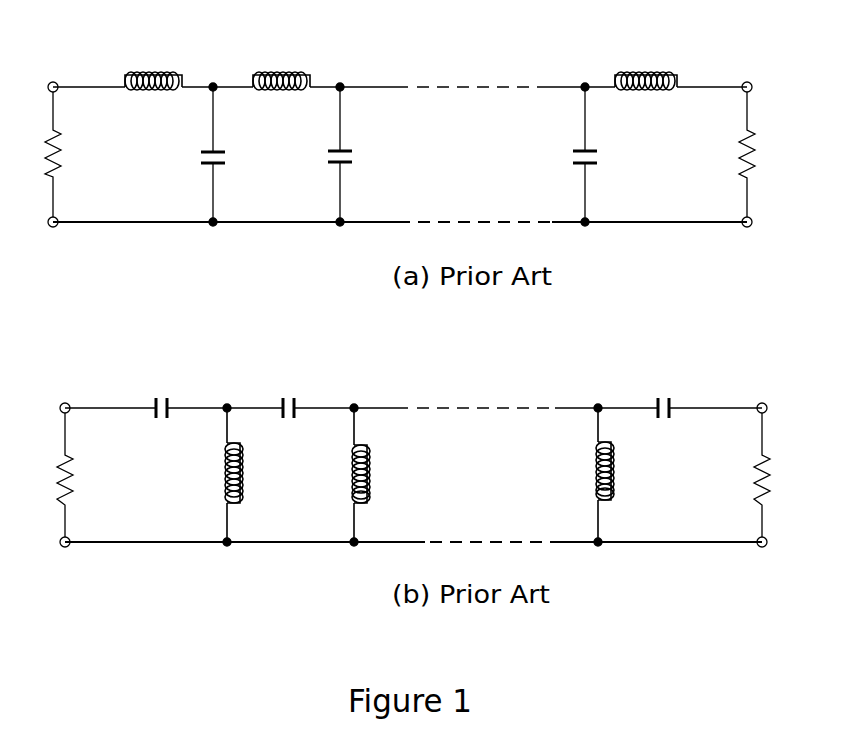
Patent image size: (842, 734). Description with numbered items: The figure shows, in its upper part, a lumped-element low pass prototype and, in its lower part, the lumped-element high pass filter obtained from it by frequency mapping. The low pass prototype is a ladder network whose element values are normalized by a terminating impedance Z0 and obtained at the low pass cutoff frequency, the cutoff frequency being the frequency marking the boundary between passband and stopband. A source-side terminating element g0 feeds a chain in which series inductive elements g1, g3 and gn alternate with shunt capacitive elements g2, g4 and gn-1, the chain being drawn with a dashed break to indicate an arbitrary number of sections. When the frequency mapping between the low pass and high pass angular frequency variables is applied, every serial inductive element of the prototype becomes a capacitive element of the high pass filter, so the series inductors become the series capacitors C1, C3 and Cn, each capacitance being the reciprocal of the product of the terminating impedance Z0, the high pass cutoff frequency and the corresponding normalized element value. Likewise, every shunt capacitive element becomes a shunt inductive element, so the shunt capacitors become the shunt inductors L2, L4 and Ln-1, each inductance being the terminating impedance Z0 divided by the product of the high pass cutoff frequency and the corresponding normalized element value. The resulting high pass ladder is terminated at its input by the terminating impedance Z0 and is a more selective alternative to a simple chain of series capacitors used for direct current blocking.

The normalized element value g0 is at (40, 154).
The normalized element value g1 is at (153, 68).
The normalized element value g2 is at (225, 154).
The normalized element value g3 is at (281, 67).
The normalized element value g4 is at (354, 154).
The normalized element value gn is at (646, 68).
The normalized element value gn-1 is at (602, 154).
The terminating impedance Z0 is at (50, 475).
The capacitive element C1 is at (157, 392).
The shunt inductive element L2 is at (245, 475).
The capacitive element C3 is at (286, 391).
The shunt inductive element L4 is at (372, 475).
The capacitive element Cn is at (660, 391).
The shunt inductive element Ln-1 is at (621, 475).